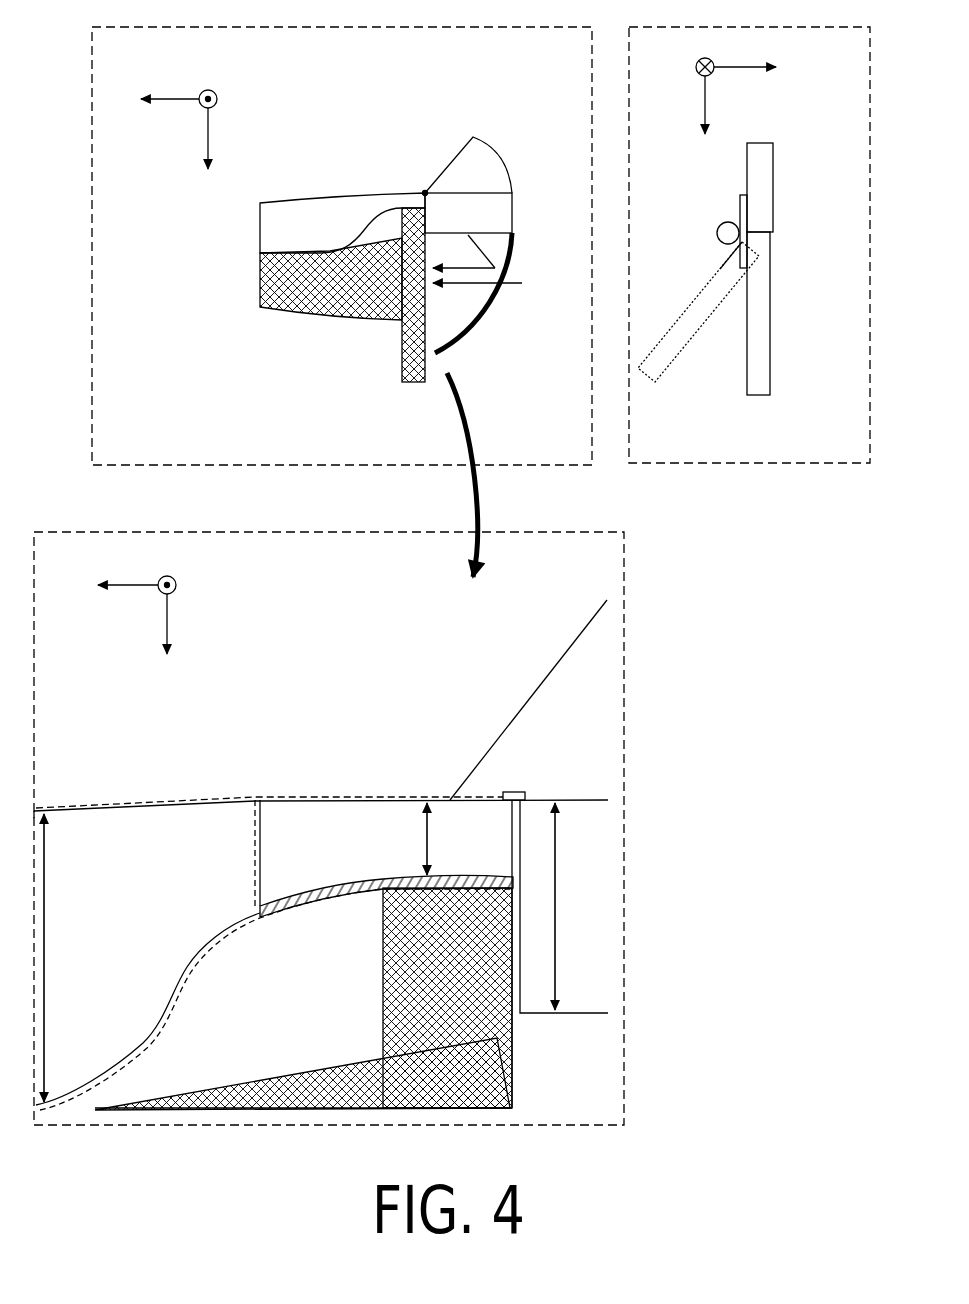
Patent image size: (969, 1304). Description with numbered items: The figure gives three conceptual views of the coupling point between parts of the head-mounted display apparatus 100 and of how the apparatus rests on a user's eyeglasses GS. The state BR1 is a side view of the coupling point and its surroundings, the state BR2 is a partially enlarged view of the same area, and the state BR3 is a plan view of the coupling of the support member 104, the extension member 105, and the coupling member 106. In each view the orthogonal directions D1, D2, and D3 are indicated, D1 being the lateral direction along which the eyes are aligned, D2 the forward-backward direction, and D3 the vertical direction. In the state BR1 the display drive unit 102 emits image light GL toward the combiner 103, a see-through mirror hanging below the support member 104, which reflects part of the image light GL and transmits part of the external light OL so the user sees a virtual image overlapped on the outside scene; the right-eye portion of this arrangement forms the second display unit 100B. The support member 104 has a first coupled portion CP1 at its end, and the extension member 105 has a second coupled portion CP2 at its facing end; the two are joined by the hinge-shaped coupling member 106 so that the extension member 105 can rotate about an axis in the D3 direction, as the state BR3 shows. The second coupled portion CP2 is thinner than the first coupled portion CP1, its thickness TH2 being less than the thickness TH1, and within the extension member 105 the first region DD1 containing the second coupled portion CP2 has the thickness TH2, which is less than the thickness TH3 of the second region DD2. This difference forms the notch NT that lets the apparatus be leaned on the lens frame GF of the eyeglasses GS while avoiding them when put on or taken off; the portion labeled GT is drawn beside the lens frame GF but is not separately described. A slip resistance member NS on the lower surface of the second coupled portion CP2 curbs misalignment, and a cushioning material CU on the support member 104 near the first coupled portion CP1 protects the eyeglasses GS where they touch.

The head-mounted display apparatus 100 is at (452, 124).
The second display unit 100B is at (392, 140).
The display drive unit 102 is at (495, 172).
The combiner 103 is at (505, 270).
The support member 104 is at (500, 218).
The extension member 105 is at (333, 218).
The coupling member 106 is at (425, 190).
The image light GL is at (498, 256).
The external light OL is at (465, 284).
The gasket top GT is at (303, 292).
The notch NT is at (376, 236).
The lens frame GF is at (402, 367).
The eyeglasses GS is at (313, 373).
The slip resistance member NS is at (352, 890).
The first region DD1 is at (287, 795).
The second region DD2 is at (163, 798).
The first coupled portion CP1 is at (530, 800).
The second coupled portion CP2 is at (459, 796).
The cushioning material CU is at (516, 915).
The thickness of the first coupled portion TH1 is at (577, 906).
The thickness of the second coupled portion TH2 is at (450, 839).
The thickness of the second region TH3 is at (68, 958).
The state BR1 is at (92, 160).
The state BR2 is at (136, 532).
The state BR3 is at (665, 27).
The first direction D1 is at (488, 322).
The second direction D2 is at (384, 331).
The third direction D3 is at (428, 359).